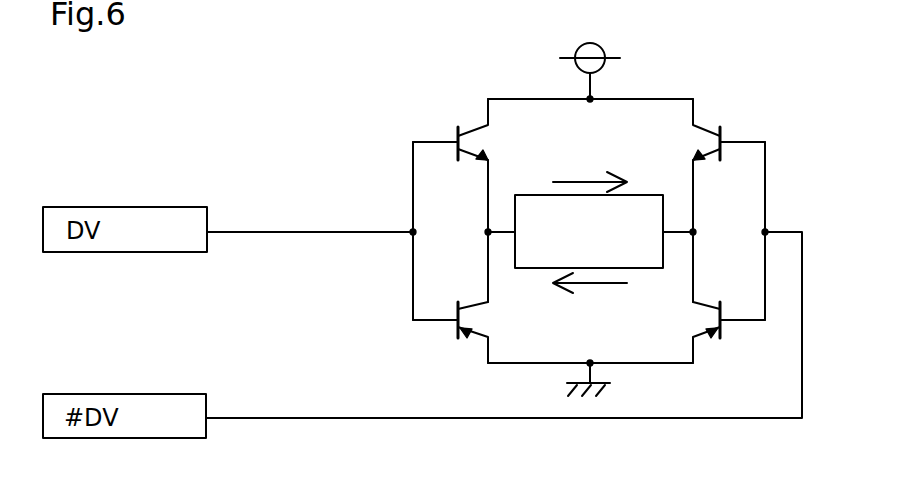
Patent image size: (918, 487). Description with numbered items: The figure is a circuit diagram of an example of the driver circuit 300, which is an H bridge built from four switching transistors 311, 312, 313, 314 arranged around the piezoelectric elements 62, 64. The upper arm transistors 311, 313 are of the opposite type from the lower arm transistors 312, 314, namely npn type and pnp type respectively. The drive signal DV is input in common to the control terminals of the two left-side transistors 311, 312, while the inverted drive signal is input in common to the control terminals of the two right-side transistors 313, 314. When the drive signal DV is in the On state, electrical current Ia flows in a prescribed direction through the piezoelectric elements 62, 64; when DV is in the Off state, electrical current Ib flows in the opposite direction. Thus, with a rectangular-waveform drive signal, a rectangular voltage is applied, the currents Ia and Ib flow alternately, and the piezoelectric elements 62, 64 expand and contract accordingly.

The driver circuit 300 is at (682, 55).
The upper arm transistor 311 is at (456, 133).
The lower arm transistor 312 is at (452, 322).
The upper arm transistor 313 is at (724, 134).
The lower arm transistor 314 is at (727, 322).
The piezoelectric element 62 is at (590, 199).
The piezoelectric element 64 is at (646, 195).